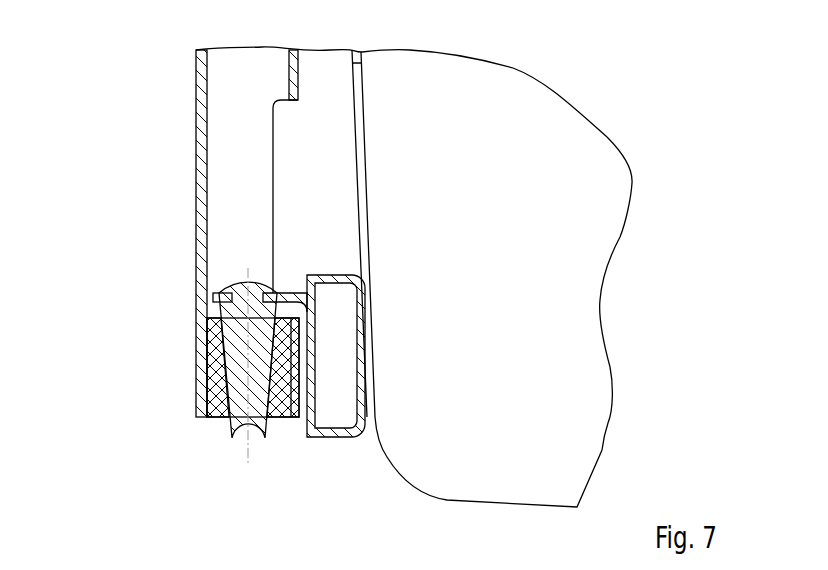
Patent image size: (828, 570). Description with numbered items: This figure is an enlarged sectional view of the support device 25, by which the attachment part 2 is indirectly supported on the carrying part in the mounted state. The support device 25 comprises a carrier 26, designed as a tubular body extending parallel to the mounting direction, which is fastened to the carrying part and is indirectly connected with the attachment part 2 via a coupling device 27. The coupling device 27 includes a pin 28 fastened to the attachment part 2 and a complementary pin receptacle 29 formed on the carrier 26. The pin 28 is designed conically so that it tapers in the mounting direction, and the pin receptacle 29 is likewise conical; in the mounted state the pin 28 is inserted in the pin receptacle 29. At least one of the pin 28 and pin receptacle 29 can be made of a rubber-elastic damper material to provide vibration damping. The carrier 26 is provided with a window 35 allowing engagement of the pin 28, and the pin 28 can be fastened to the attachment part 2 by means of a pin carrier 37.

The attachment part 2 is at (479, 282).
The support device 25 is at (240, 308).
The carrier 26 is at (202, 250).
The coupling device 27 is at (268, 468).
The pin 28 is at (241, 431).
The pin receptacle 29 is at (222, 384).
The window 35 is at (273, 164).
The pin carrier 37 is at (325, 275).